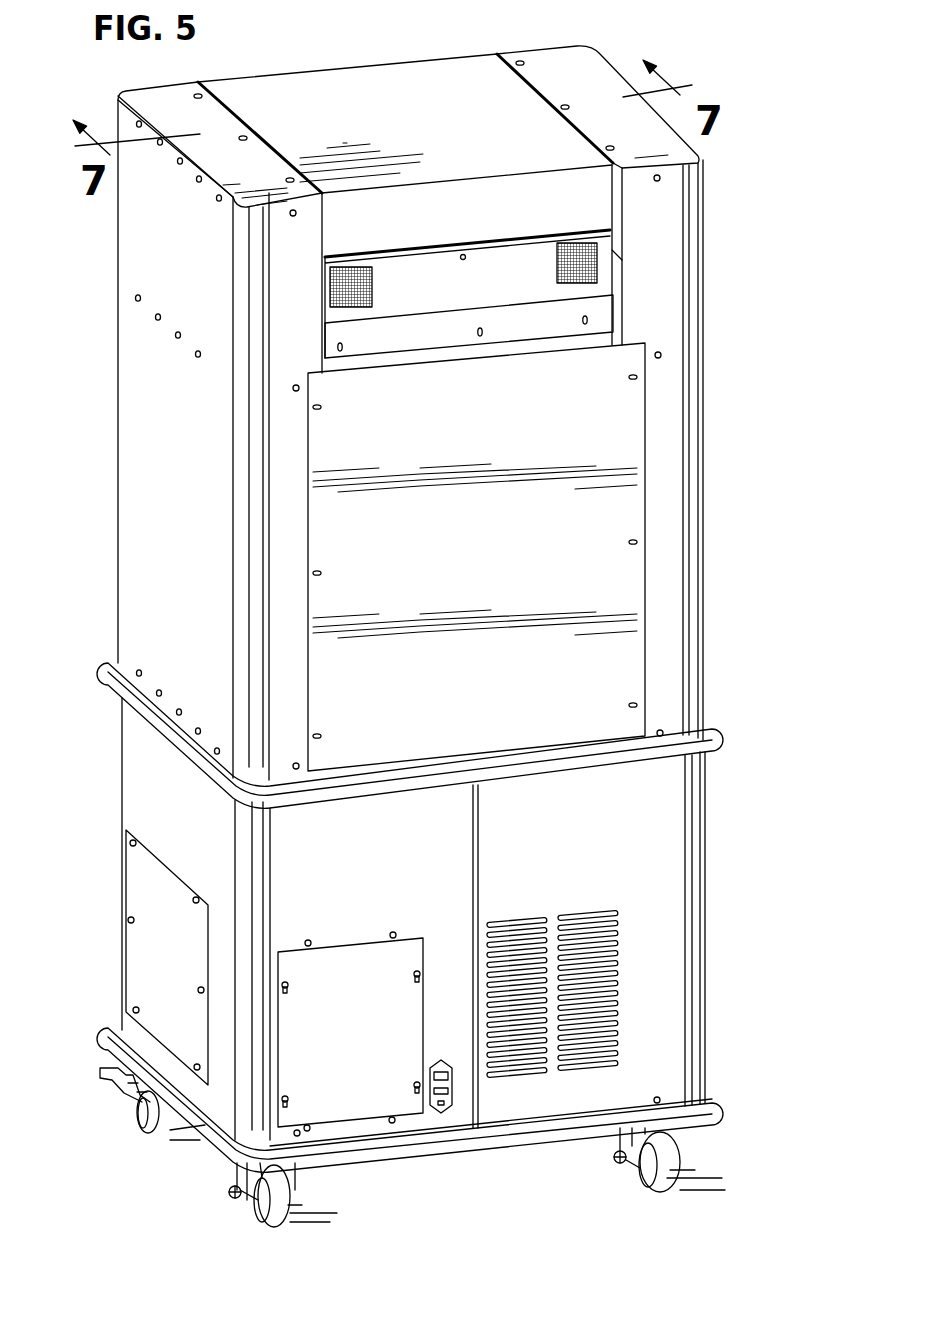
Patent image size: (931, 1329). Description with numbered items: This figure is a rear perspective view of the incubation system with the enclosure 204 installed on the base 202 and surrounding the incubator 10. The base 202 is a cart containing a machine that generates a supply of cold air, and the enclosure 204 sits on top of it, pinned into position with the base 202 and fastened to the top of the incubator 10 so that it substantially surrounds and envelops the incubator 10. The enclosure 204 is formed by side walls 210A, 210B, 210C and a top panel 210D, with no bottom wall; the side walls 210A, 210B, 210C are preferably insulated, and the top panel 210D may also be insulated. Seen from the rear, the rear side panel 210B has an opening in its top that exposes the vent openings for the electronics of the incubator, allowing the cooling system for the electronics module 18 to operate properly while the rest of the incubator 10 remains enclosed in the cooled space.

The incubator 10 is at (724, 330).
The electronics module 18 is at (532, 265).
The base 202 is at (644, 838).
The enclosure 204 is at (712, 537).
The side wall 210A is at (160, 476).
The rear side panel 210B is at (618, 639).
The side wall 210C is at (703, 445).
The top panel 210D is at (384, 66).